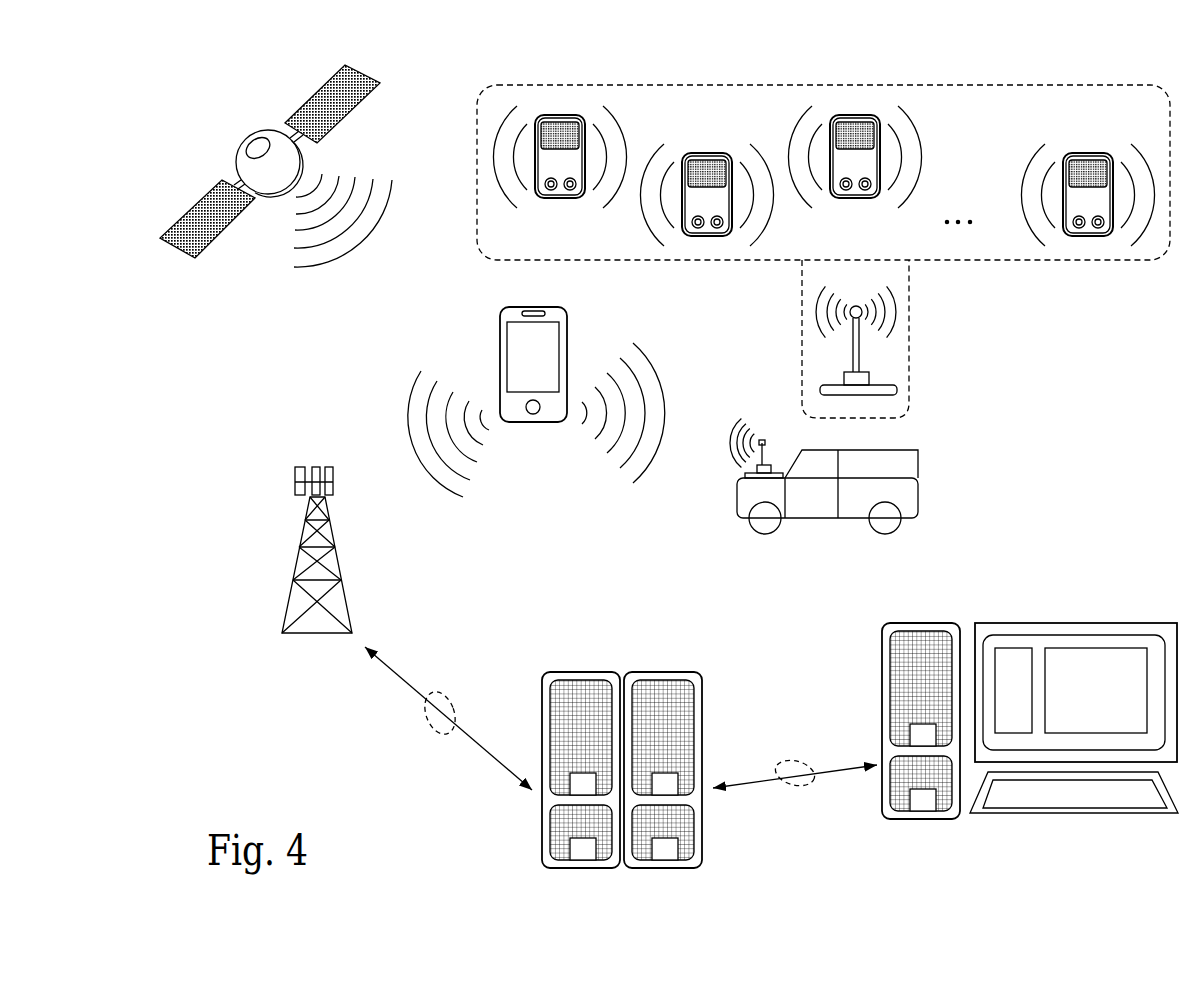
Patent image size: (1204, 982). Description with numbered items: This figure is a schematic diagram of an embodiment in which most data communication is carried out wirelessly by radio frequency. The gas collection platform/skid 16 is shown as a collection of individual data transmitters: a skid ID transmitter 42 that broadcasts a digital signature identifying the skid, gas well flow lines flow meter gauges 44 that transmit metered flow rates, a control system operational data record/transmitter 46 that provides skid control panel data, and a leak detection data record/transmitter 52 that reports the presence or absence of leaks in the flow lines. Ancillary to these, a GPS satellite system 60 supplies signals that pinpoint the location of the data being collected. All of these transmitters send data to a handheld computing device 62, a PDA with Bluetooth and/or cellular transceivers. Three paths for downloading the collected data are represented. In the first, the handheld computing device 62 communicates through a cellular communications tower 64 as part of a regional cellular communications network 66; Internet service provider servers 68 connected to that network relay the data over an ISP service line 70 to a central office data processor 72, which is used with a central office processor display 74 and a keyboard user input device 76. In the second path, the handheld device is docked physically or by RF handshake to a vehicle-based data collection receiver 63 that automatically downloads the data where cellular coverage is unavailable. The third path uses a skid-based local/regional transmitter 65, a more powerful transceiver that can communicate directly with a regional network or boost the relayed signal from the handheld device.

The gas collection platform/skid 16 is at (1045, 260).
The skid ID transmitter 42 is at (560, 106).
The gas well flow lines flow meter gauges 44 is at (707, 141).
The control system operational data record/transmitter 46 is at (855, 106).
The leak detection data record/transmitter 52 is at (1086, 141).
The GPS satellite system 60 is at (268, 130).
The handheld computing device 62 is at (565, 422).
The vehicle-based data collection receiver 63 is at (738, 502).
The cellular communications tower 64 is at (283, 612).
The skid-based local/regional transmitter 65 is at (876, 360).
The regional cellular communications network 66 is at (433, 733).
The Internet service provider servers 68 is at (665, 672).
The ISP service line 70 is at (778, 760).
The central office data processor 72 is at (920, 819).
The central office processor display 74 is at (1103, 623).
The central office processor user input device 76 is at (1088, 813).